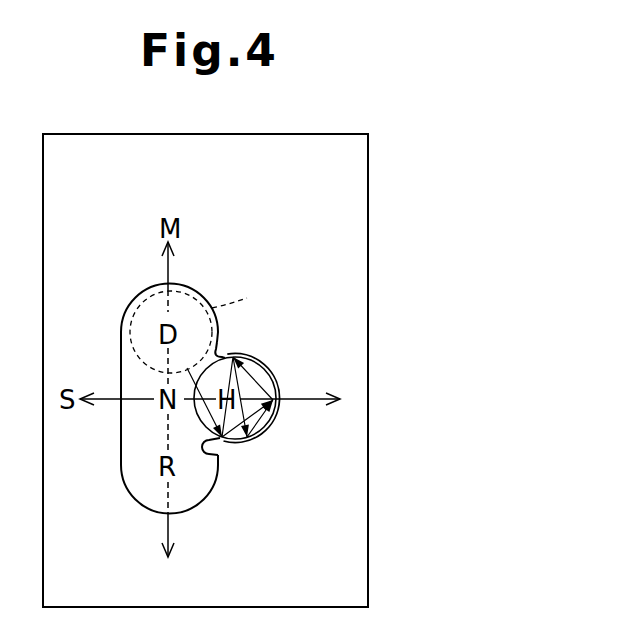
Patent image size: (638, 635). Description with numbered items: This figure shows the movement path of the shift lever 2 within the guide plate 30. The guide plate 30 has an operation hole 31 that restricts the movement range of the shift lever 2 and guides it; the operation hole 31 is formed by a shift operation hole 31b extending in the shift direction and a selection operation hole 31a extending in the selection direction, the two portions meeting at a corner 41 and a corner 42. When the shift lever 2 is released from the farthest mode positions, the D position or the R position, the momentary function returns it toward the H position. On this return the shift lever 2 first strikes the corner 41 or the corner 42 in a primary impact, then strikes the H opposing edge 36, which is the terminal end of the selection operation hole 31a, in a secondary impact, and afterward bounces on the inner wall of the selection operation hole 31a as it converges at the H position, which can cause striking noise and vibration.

The guide plate 30 is at (369, 190).
The operation hole 31 is at (203, 297).
The selection operation hole 31a is at (254, 366).
The shift operation hole 31b is at (121, 450).
The H opposing edge 36 is at (271, 383).
The corner 41 is at (221, 356).
The corner 42 is at (214, 447).
The shift lever 2 is at (222, 348).